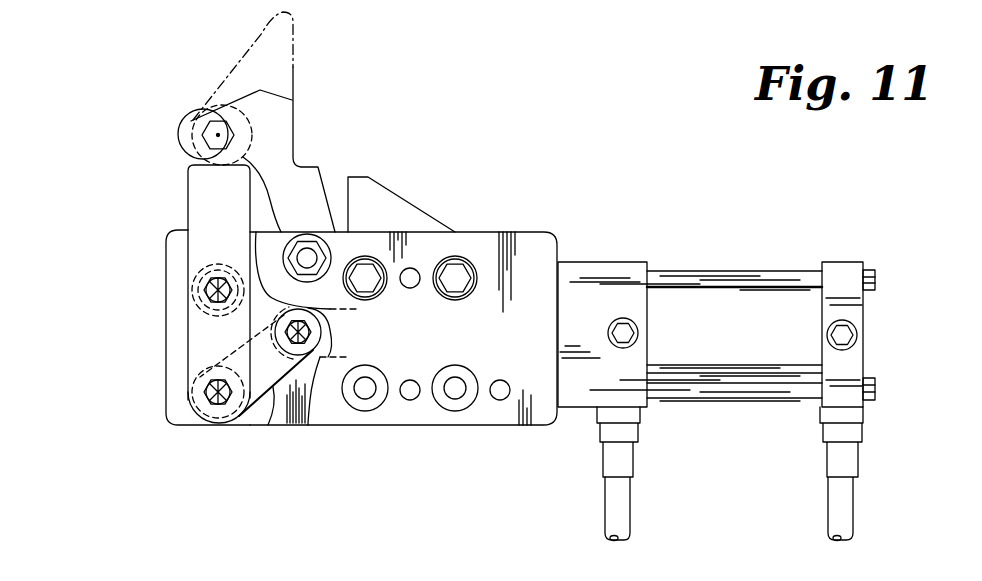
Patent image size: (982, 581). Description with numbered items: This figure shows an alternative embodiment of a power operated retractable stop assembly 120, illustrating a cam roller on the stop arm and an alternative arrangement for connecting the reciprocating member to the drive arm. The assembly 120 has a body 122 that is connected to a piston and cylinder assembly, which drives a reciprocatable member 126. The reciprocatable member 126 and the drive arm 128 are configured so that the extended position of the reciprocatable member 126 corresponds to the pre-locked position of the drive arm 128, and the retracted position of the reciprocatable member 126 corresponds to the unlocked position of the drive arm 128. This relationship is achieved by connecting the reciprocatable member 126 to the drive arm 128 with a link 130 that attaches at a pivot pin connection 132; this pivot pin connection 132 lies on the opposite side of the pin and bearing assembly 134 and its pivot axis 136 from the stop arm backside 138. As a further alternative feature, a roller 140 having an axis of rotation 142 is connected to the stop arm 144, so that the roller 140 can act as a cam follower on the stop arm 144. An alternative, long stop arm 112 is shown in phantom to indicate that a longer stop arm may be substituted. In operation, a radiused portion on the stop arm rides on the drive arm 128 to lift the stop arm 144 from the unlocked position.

The long stop arm 112 is at (294, 66).
The power operated retractable stop assembly 120 is at (577, 176).
The body 122 is at (557, 240).
The reciprocatable member 126 is at (309, 427).
The drive arm 128 is at (188, 352).
The link 130 is at (280, 405).
The pivot pin connection 132 is at (207, 392).
The pin and bearing assembly 134 is at (203, 298).
The pivot axis 136 is at (207, 283).
The stop arm backside 138 is at (262, 193).
The roller 140 is at (212, 120).
The axis of rotation 142 is at (218, 135).
The stop arm 144 is at (294, 132).